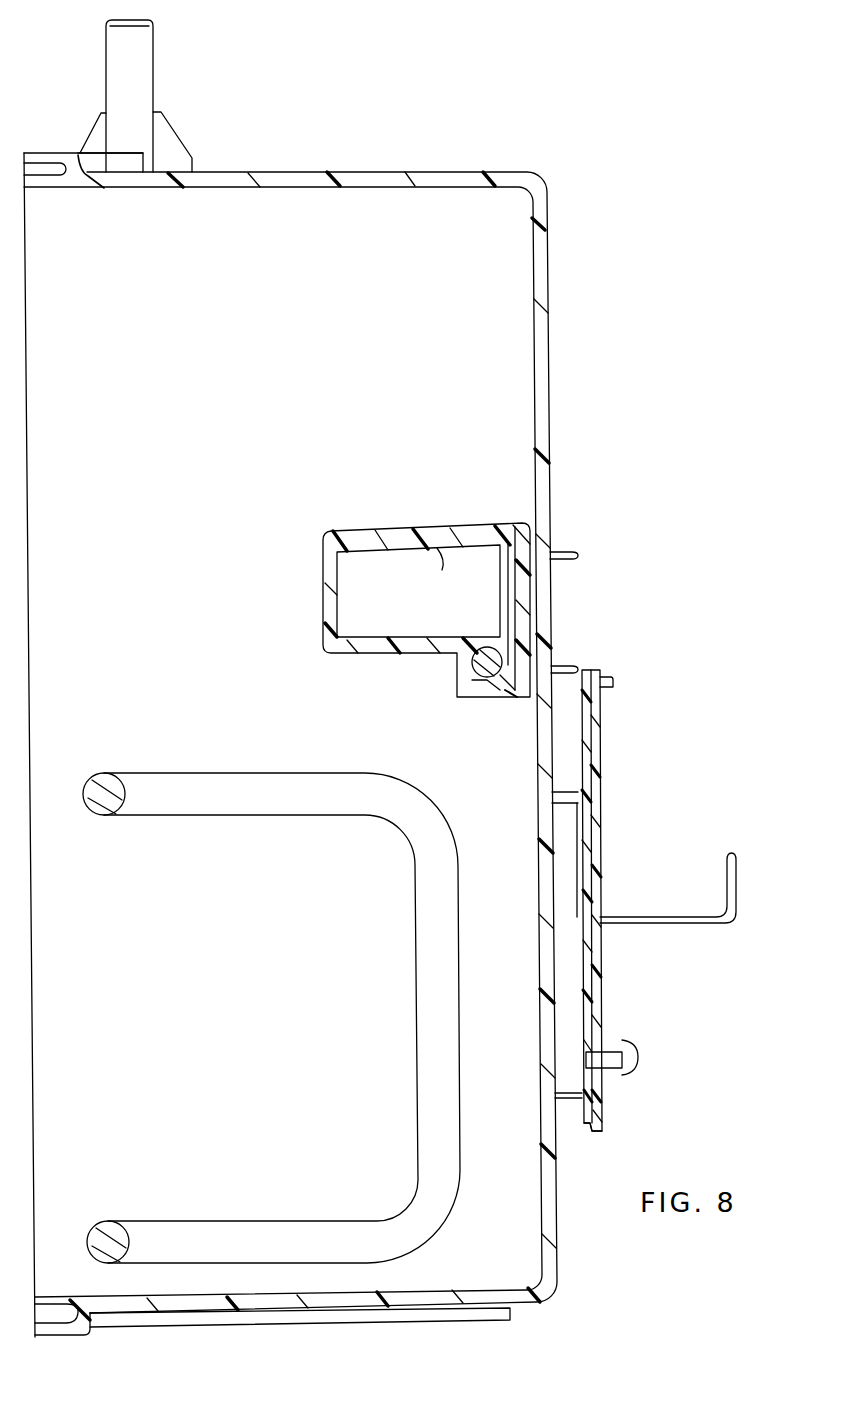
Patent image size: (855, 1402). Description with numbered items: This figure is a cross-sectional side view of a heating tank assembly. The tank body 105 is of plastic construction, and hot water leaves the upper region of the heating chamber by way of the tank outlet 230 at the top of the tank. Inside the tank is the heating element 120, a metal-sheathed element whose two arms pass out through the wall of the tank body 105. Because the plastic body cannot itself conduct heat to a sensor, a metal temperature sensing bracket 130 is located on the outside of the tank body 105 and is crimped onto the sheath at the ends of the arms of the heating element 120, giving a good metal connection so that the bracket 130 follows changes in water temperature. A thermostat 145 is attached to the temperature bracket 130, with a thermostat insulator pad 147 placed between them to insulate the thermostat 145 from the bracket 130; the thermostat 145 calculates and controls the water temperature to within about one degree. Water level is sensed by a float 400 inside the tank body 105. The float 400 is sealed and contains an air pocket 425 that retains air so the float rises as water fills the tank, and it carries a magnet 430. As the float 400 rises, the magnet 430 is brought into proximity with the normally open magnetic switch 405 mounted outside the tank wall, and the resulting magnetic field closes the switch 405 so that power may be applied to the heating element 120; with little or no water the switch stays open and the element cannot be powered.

The tank body 105 is at (549, 325).
The heating element 120 is at (418, 986).
The temperature sensing bracket 130 is at (672, 918).
The thermostat 145 is at (602, 1117).
The thermostat insulator pad 147 is at (588, 1132).
The tank outlet 230 is at (150, 96).
The float 400 is at (323, 585).
The magnetic switch 405 is at (605, 688).
The air pocket 425 is at (468, 523).
The magnet 430 is at (483, 680).